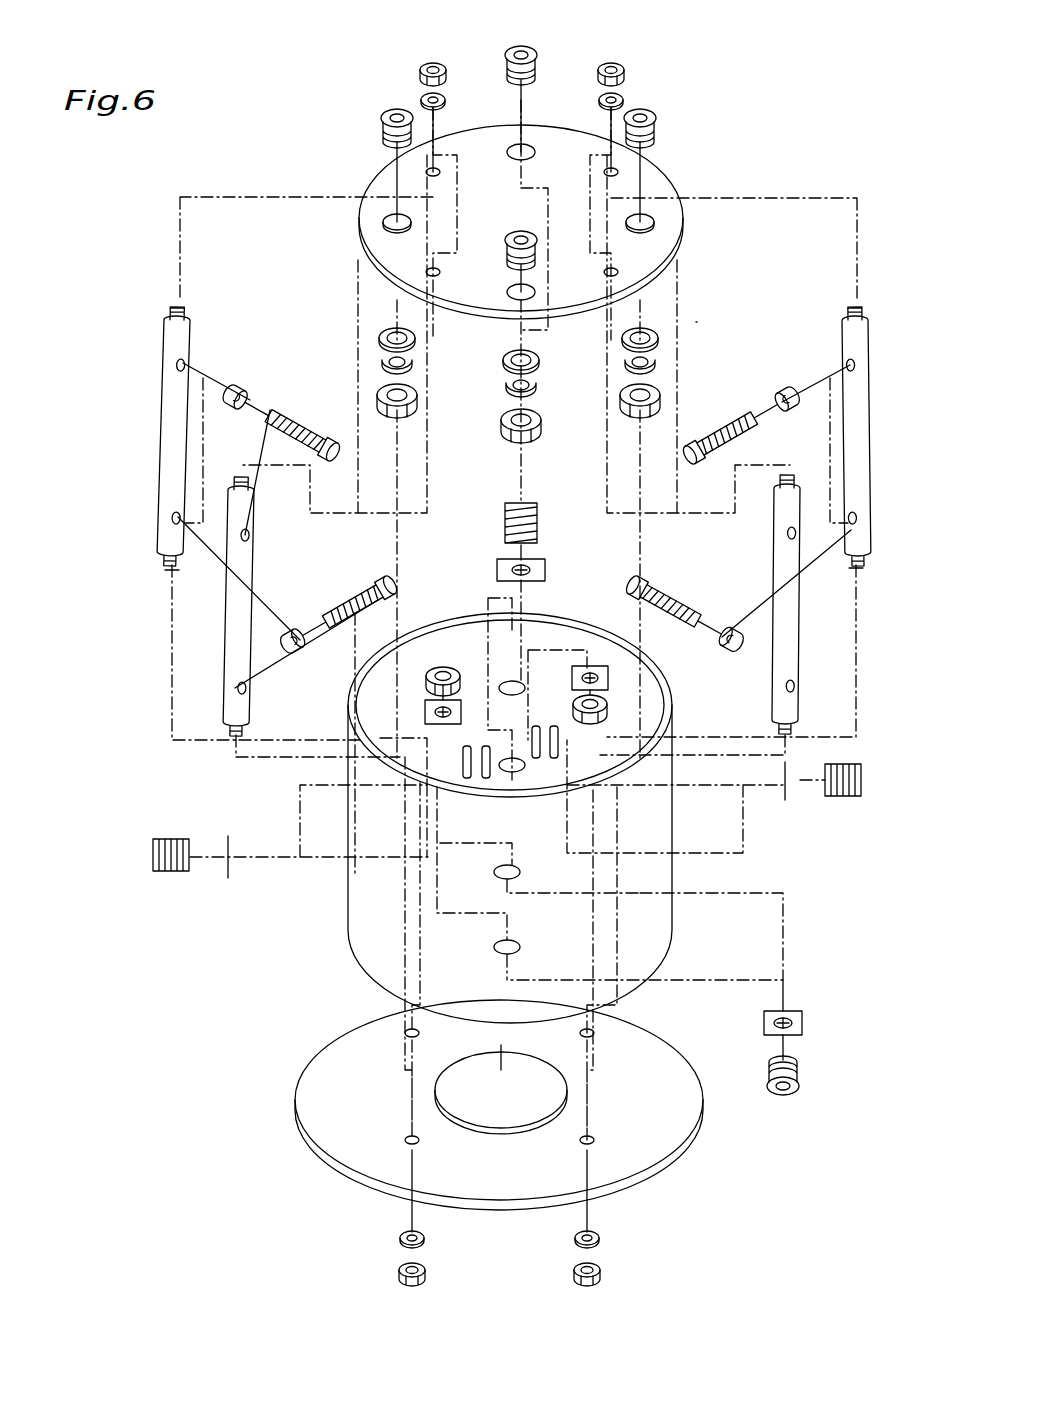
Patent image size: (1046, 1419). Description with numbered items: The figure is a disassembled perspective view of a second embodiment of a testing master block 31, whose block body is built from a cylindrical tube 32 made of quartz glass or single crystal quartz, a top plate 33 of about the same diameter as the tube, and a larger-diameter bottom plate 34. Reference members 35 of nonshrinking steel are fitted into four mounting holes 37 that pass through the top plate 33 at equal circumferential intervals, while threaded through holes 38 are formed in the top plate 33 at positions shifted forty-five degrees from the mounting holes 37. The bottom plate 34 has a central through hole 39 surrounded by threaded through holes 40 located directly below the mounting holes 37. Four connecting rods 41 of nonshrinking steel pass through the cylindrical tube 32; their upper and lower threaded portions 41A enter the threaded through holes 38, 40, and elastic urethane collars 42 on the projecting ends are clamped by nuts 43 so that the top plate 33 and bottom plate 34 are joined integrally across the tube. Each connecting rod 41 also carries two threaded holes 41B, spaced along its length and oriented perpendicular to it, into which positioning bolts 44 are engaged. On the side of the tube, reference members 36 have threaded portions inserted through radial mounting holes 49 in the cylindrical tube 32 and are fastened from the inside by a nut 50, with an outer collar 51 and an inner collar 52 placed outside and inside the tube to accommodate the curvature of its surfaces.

The master block 31 is at (710, 321).
The cylindrical tube 32 is at (372, 922).
The top plate 33 is at (665, 183).
The bottom plate 34 is at (640, 1160).
The reference member 35 is at (520, 45).
The reference member 36 is at (534, 520).
The mounting hole 37 is at (655, 222).
The threaded through hole 38 is at (618, 172).
The through hole 39 is at (500, 1115).
The threaded through hole 40 is at (404, 1036).
The connecting rod 41 is at (845, 340).
The threaded portion 41A is at (186, 308).
The threaded hole 41B is at (186, 362).
The collar 42 is at (622, 100).
The nut 43 is at (622, 66).
The positioning bolt 44 is at (300, 428).
The mounting hole 49 is at (508, 684).
The nut 50 is at (610, 708).
The outer collar 51 is at (546, 568).
The inner collar 52 is at (600, 668).